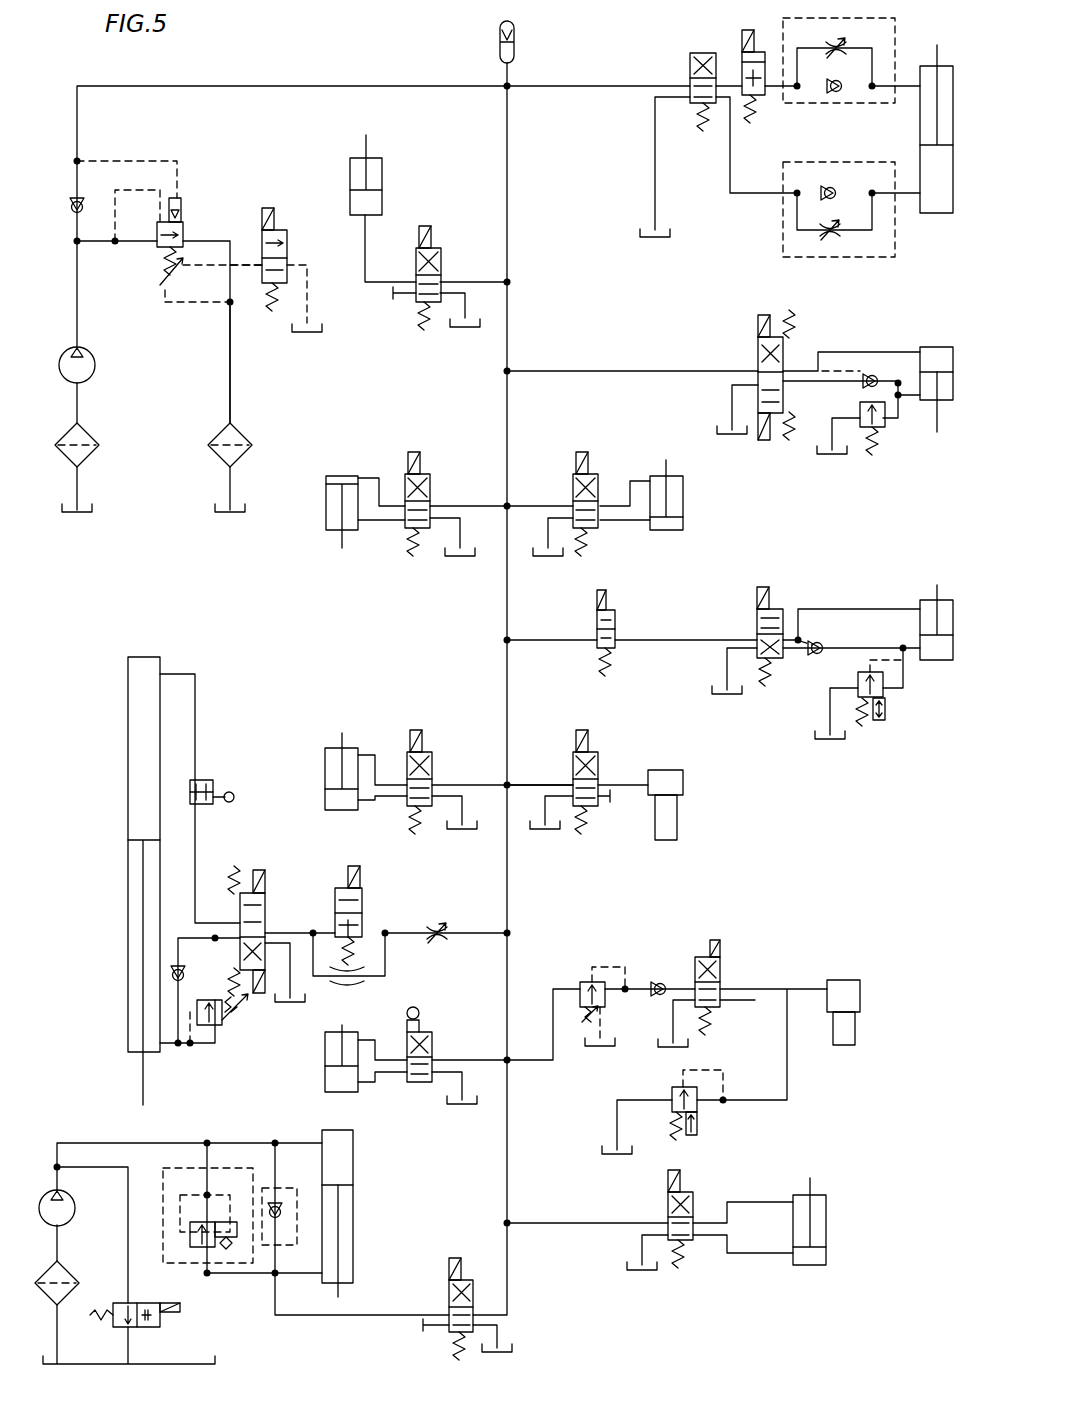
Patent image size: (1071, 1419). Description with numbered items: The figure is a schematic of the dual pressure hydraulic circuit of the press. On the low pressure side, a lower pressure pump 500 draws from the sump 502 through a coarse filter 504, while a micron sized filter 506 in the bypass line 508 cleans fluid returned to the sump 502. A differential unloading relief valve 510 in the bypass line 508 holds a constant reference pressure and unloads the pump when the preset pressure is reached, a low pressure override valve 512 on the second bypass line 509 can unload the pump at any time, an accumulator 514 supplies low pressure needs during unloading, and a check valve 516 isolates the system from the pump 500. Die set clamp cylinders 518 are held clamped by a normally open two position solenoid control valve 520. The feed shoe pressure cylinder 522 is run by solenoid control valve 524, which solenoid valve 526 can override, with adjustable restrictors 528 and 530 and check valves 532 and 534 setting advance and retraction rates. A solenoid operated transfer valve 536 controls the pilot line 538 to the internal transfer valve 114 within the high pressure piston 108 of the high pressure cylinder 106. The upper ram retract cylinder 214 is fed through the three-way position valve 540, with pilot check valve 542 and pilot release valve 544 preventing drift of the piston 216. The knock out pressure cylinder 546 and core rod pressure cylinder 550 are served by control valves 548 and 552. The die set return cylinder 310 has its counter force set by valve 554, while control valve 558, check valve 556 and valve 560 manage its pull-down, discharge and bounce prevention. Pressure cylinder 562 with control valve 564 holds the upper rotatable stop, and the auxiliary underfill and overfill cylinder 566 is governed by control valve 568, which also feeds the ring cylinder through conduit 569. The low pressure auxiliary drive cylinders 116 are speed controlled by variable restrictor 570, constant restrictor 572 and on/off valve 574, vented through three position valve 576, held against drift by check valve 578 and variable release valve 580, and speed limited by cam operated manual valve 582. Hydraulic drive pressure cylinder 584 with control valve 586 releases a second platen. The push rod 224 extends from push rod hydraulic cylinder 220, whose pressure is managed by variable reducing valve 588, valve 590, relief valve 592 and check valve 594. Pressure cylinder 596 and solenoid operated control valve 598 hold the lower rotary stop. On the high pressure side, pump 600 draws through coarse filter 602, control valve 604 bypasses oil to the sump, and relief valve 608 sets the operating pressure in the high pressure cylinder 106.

The lower pressure pump 500 is at (95, 360).
The sump 502 is at (92, 510).
The coarse filter 504 is at (92, 437).
The micron sized filter 506 is at (247, 437).
The bypass line 508 is at (232, 372).
The second bypass line 509 is at (243, 262).
The differential unloading relief valve 510 is at (183, 232).
The low pressure override valve 512 is at (287, 253).
The accumulator 514 is at (516, 38).
The check valve 516 is at (84, 200).
The die set clamp cylinders 518 is at (350, 172).
The two position solenoid control valve 520 is at (440, 264).
The pressure cylinder 522 is at (953, 75).
The solenoid control valve 524 is at (716, 68).
The solenoid valve 526 is at (742, 55).
The adjustable restrictor 528 is at (852, 32).
The adjustable restrictor 530 is at (838, 238).
The check valve 532 is at (836, 92).
The check valve 534 is at (830, 186).
The solenoid operated transfer valve 536 is at (449, 1293).
The pilot line 538 is at (502, 1320).
The solenoid activated three-way position valve 540 is at (758, 357).
The pilot check valve 542 is at (865, 388).
The pilot release valve 544 is at (868, 430).
The knock out pressure cylinder 546 is at (326, 500).
The control valve 548 is at (430, 490).
The core rod pressure cylinder 550 is at (683, 495).
The control valve 552 is at (573, 490).
The electronic solenoid activated valve 554 is at (885, 705).
The check valve 556 is at (822, 642).
The control valve 558 is at (783, 615).
The valve 560 is at (615, 620).
The pressure cylinder 562 is at (325, 795).
The control valve 564 is at (432, 770).
The auxiliary underfill and overfill cylinder 566 is at (683, 780).
The control valve 568 is at (598, 768).
The conduit 569 is at (538, 785).
The variable restrictor 570 is at (445, 922).
The constant restrictor 572 is at (347, 985).
The solenoid operated on/off valve 574 is at (362, 905).
The three position valve 576 is at (265, 925).
The check valve 578 is at (170, 972).
The variable release valve 580 is at (222, 1028).
The cam operated manual valve 582 is at (207, 780).
The hydraulic drive pressure cylinder 584 is at (325, 1075).
The control valve 586 is at (432, 1050).
The variable reducing valve 588 is at (580, 990).
The valve 590 is at (720, 975).
The electronically controlled relief valve 592 is at (697, 1118).
The check valve 594 is at (660, 982).
The pressure cylinder 596 is at (826, 1230).
The solenoid operated control valve 598 is at (693, 1205).
The pump 600 is at (75, 1215).
The coarse filter 602 is at (70, 1275).
The solenoid activated control valve 604 is at (140, 1330).
The variable controlled remote electronic controlled relief valve 608 is at (205, 1222).
The high pressure cylinder 106 is at (353, 1175).
The high pressure piston 108 is at (340, 1292).
The internal transfer valve 114 is at (281, 1208).
The low pressure auxiliary drive cylinders 116 is at (128, 800).
The upper ram retract cylinder 214 is at (937, 347).
The piston 216 is at (945, 420).
The push rod hydraulic cylinder 220 is at (860, 992).
The push rod 224 is at (855, 1035).
The die set return cylinder 310 is at (937, 660).